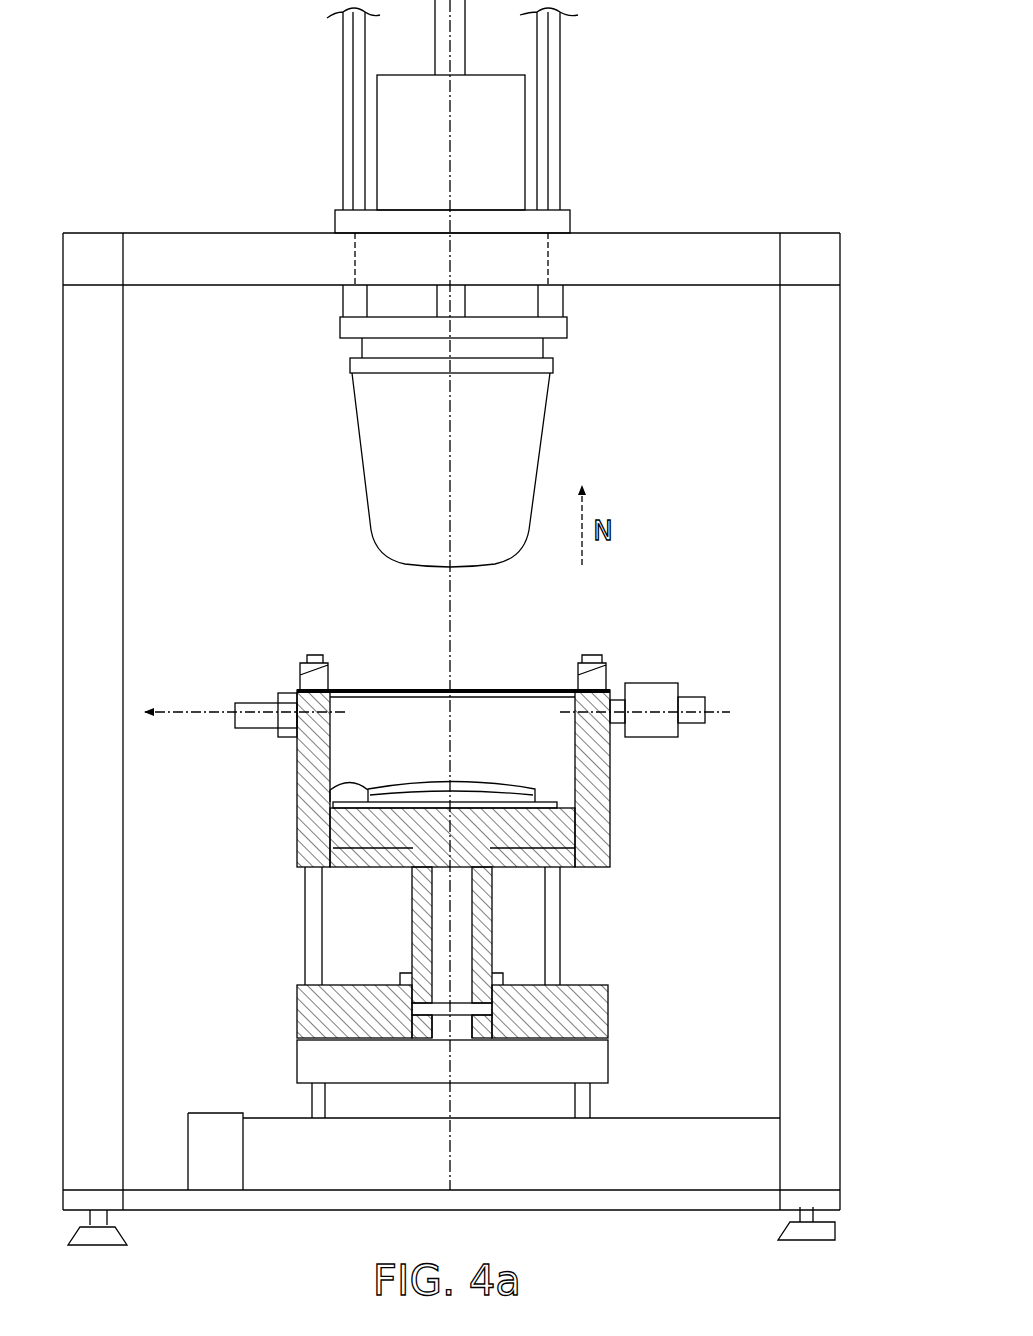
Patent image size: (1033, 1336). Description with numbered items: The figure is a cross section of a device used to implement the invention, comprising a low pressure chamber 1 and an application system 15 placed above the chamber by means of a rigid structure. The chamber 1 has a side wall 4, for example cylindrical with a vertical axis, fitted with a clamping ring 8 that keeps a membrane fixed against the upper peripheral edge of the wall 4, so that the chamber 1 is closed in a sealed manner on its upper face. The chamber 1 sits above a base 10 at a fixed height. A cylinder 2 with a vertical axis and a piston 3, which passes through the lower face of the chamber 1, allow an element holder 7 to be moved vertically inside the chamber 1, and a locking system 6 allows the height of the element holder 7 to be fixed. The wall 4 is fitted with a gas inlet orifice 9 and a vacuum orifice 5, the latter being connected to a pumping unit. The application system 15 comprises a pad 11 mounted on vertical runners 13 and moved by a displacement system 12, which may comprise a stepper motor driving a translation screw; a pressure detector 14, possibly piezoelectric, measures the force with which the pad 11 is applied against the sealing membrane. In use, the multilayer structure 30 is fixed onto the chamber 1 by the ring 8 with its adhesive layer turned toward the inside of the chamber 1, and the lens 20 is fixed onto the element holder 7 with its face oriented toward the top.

The low pressure chamber 1 is at (630, 630).
The cylinder 2 is at (460, 912).
The piston 3 is at (610, 827).
The side wall 4 is at (297, 747).
The vacuum orifice 5 is at (249, 702).
The locking system 6 is at (573, 998).
The element holder 7 is at (333, 807).
The clamping ring 8 is at (568, 677).
The gas inlet orifice 9 is at (672, 680).
The base 10 is at (592, 1053).
The pad 11 is at (553, 403).
The displacement system 12 is at (513, 135).
The vertical runners 13 is at (641, 57).
The pressure detector 14 is at (528, 349).
The application system 15 is at (547, 116).
The lens 20 is at (330, 786).
The multilayer structure 30 is at (380, 680).